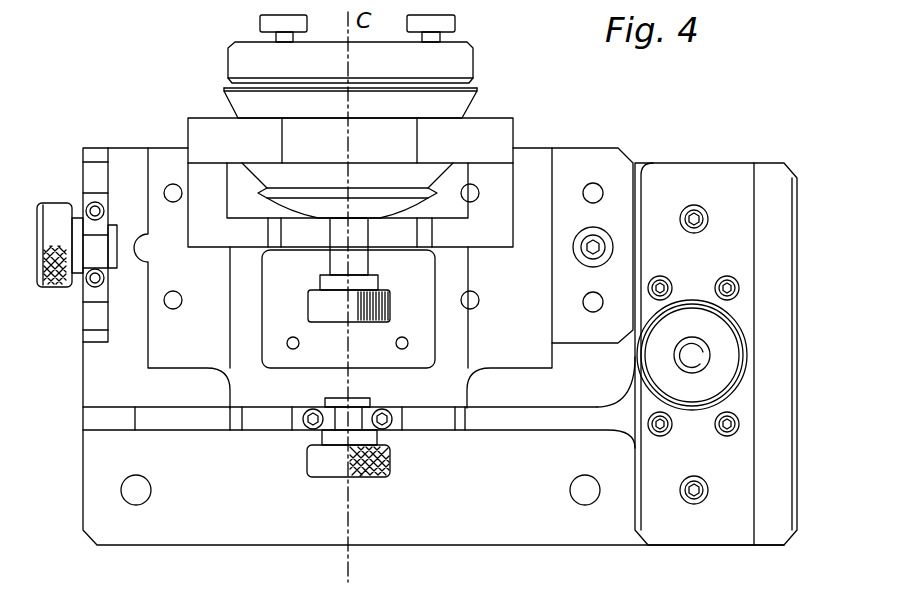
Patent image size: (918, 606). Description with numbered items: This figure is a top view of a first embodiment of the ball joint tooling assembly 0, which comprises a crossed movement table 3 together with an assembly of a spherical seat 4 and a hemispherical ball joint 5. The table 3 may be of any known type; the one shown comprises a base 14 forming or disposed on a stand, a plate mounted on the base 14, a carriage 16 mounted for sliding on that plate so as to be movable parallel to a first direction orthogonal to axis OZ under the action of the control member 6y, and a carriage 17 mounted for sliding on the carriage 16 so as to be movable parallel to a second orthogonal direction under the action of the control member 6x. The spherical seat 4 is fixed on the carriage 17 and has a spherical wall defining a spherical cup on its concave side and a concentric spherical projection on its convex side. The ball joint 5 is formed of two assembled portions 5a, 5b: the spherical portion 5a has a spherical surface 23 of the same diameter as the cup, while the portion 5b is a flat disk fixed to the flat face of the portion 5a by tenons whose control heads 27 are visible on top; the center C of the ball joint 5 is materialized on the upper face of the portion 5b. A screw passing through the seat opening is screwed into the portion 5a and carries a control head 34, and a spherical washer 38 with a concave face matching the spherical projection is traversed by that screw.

The ball joint tooling assembly 0 is at (94, 126).
The crossed movement table 3 is at (805, 376).
The spherical seat 4 is at (503, 137).
The hemispherical ball joint 5 is at (483, 82).
The spherical portion of ball joint 5a is at (240, 106).
The flat disk portion of ball joint 5b is at (237, 62).
The control member 6x is at (332, 467).
The control member 6y is at (55, 288).
The base 14 is at (525, 532).
The carriage 16 is at (165, 347).
The carriage 17 is at (415, 290).
The spherical surface 23 is at (473, 108).
The control heads 27 is at (266, 21).
The control head 34 is at (327, 312).
The spherical washer 38 is at (405, 209).